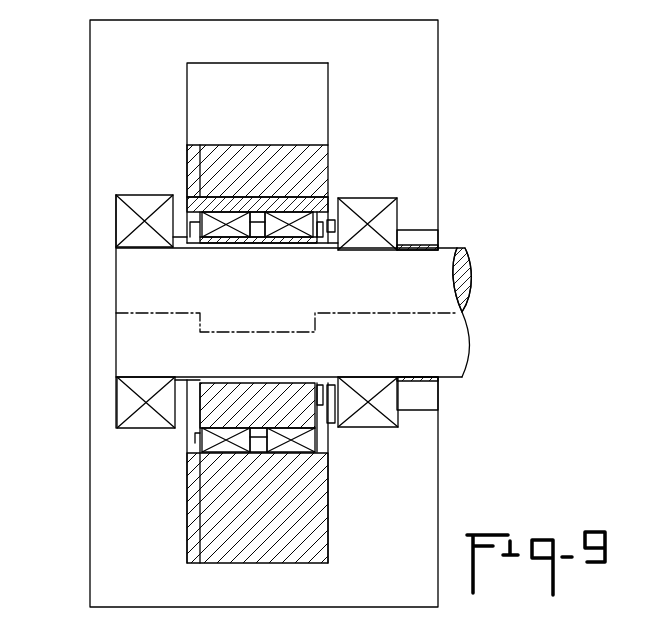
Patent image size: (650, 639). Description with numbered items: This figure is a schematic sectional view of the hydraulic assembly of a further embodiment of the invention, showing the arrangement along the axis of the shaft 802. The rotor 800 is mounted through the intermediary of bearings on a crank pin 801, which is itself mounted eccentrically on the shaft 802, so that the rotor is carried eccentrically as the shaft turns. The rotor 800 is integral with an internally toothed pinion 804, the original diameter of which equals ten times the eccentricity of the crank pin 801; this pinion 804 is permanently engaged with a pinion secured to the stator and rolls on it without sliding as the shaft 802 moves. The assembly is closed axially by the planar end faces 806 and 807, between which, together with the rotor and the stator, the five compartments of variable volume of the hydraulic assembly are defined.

The rotor 800 is at (328, 158).
The crank pin 801 is at (290, 387).
The shaft 802 is at (133, 280).
The internally toothed pinion 804 is at (328, 435).
The planar end face 806 is at (188, 100).
The planar end face 807 is at (327, 113).